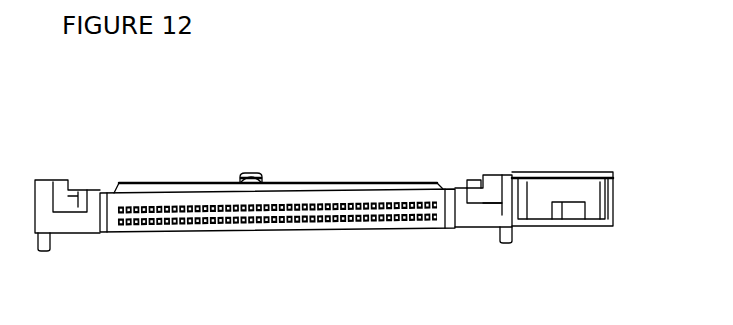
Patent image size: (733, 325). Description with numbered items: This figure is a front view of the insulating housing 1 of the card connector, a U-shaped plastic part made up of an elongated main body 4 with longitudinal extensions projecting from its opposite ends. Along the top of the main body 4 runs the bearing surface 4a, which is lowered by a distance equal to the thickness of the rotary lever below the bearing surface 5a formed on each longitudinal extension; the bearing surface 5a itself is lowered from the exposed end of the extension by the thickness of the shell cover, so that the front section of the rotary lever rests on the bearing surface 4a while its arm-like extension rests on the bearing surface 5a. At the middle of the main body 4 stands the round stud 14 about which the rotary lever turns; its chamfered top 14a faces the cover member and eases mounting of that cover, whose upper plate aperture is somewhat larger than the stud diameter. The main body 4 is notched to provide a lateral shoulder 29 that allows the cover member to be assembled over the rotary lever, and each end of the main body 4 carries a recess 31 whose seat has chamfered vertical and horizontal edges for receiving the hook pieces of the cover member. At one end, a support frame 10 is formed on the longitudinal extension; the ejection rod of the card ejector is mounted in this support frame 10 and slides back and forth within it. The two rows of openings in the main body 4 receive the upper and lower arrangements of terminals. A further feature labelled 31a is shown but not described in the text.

The insulating housing 1 is at (573, 146).
The main body 4 is at (440, 222).
The bearing surface 4a is at (330, 183).
The bearing surface 5a is at (53, 180).
The support frame 10 is at (598, 172).
The round stud 14 is at (265, 175).
The chamfered top 14a is at (245, 175).
The lateral shoulder 29 is at (367, 216).
The recess 31 is at (472, 179).
The lock projection 31a is at (495, 204).